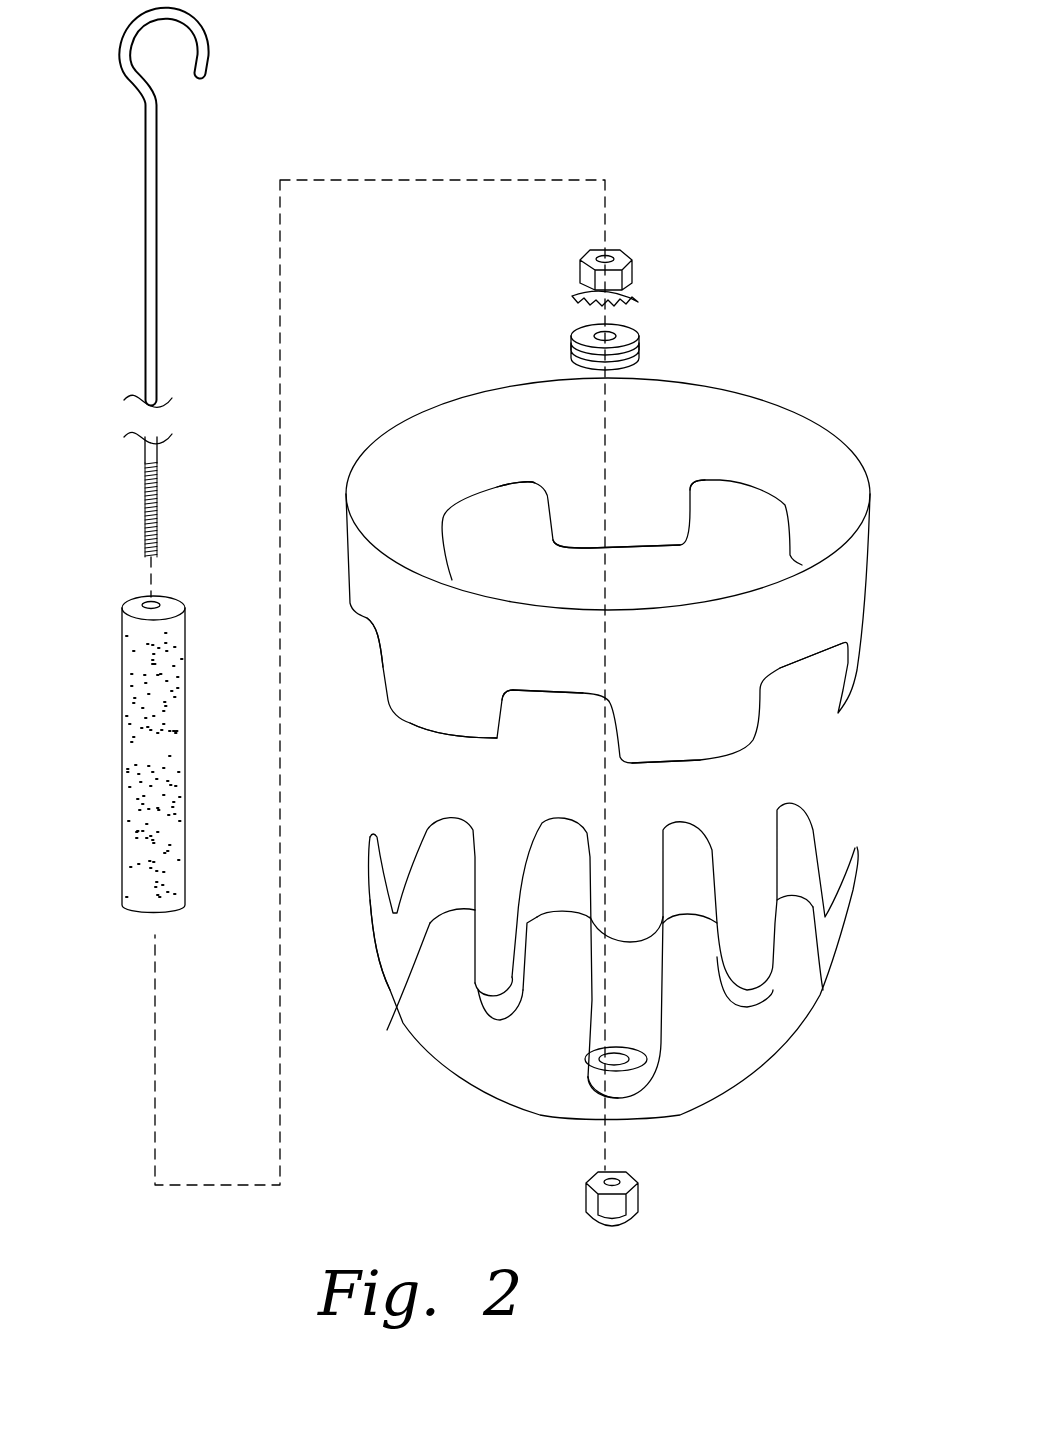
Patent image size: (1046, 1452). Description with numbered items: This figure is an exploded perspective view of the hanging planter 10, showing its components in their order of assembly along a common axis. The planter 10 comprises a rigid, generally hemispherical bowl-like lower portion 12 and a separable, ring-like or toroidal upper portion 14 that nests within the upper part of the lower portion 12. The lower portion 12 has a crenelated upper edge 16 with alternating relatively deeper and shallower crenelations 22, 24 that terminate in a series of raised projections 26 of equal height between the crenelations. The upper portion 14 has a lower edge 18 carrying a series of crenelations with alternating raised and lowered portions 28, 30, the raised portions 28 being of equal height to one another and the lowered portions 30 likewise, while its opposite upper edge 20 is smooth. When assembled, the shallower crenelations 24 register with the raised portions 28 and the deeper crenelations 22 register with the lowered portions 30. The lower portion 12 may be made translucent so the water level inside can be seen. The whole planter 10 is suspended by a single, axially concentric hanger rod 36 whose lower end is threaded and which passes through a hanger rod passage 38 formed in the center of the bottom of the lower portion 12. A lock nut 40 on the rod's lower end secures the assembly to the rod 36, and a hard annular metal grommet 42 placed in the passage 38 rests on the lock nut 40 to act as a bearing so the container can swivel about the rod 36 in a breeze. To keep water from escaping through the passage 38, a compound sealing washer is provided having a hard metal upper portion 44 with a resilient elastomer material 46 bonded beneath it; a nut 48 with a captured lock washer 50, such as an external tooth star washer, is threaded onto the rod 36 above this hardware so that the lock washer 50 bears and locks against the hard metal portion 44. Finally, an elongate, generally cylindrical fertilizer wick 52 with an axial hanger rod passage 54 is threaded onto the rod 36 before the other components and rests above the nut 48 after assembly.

The hanging planter 10 is at (774, 1186).
The lower portion 12 is at (490, 1100).
The upper portion 14 is at (396, 694).
The crenelated upper edge 16 is at (372, 944).
The lower edge 18 is at (506, 702).
The upper edge 20 is at (672, 602).
The deeper crenelations 22 is at (478, 998).
The shallower crenelations 24 is at (396, 882).
The raised projections 26 is at (470, 906).
The raised portions 28 is at (705, 484).
The lowered portions 30 is at (455, 580).
The hanger rod 36 is at (144, 331).
The hanger rod passage 38 is at (614, 1056).
The lock nut 40 is at (586, 1205).
The grommet 42 is at (605, 1080).
The hard metal upper portion 44 is at (640, 336).
The elastomer material 46 is at (640, 354).
The nut 48 is at (640, 262).
The lock washer 50 is at (640, 294).
The fertilizer wick 52 is at (122, 751).
The hanger rod passage 54 is at (148, 601).